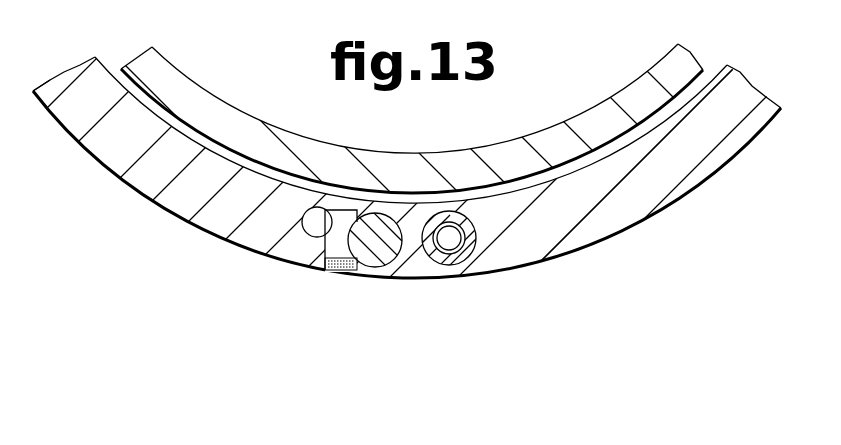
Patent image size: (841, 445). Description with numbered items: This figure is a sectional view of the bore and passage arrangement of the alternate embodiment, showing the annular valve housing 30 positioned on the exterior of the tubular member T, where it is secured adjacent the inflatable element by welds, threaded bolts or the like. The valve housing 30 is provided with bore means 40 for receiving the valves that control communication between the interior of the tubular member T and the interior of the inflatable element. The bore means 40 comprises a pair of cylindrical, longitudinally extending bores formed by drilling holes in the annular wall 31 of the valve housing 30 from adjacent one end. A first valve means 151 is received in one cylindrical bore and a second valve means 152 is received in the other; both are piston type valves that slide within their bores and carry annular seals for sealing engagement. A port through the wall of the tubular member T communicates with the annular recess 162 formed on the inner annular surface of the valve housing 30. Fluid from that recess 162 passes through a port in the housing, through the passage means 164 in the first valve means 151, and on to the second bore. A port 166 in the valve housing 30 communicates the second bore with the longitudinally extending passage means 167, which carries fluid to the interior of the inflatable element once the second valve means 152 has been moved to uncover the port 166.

The annular valve housing 30 is at (606, 238).
The annular wall 31 is at (222, 218).
The tubular member T is at (556, 125).
The bore means 40 is at (427, 281).
The first valve means 151 is at (463, 271).
The second valve means 152 is at (373, 261).
The annular recess 162 is at (513, 184).
The passage means 164 is at (450, 233).
The port 166 is at (332, 242).
The longitudinally extending passage means 167 is at (316, 222).